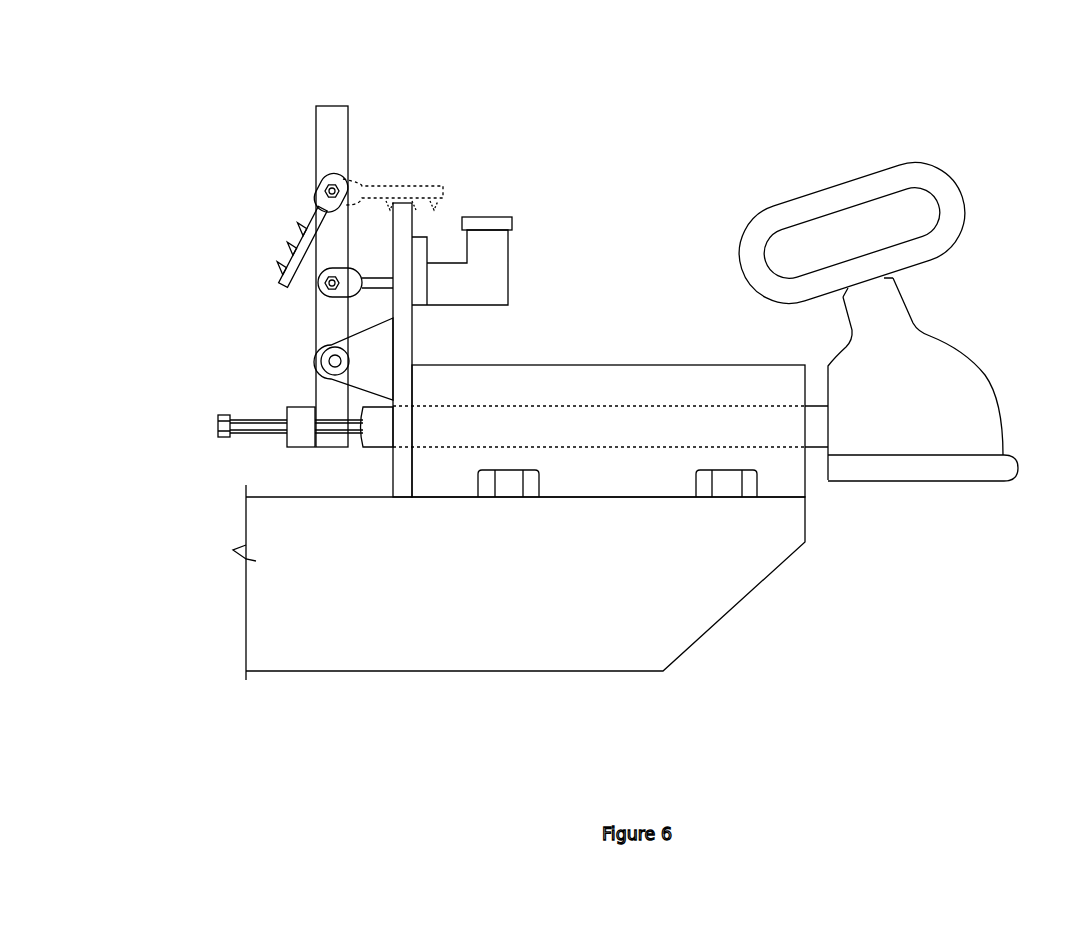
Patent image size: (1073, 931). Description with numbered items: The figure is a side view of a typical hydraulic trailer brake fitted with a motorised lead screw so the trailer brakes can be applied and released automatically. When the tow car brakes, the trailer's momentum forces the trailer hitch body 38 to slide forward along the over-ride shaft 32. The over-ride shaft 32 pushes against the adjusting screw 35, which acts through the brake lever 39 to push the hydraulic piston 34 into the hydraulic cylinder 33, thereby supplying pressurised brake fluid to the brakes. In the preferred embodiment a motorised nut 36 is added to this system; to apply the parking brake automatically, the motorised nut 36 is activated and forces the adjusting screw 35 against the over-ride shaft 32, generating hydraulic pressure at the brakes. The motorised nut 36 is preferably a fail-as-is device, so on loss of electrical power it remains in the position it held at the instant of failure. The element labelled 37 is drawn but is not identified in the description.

The over-ride shaft 32 is at (722, 423).
The hydraulic cylinder 33 is at (458, 287).
The hydraulic piston 34 is at (377, 287).
The adjusting screw 35 is at (235, 437).
The motorised nut 36 is at (290, 405).
The toothed lever 37 is at (290, 248).
The trailer hitch body 38 is at (783, 463).
The brake lever 39 is at (316, 325).